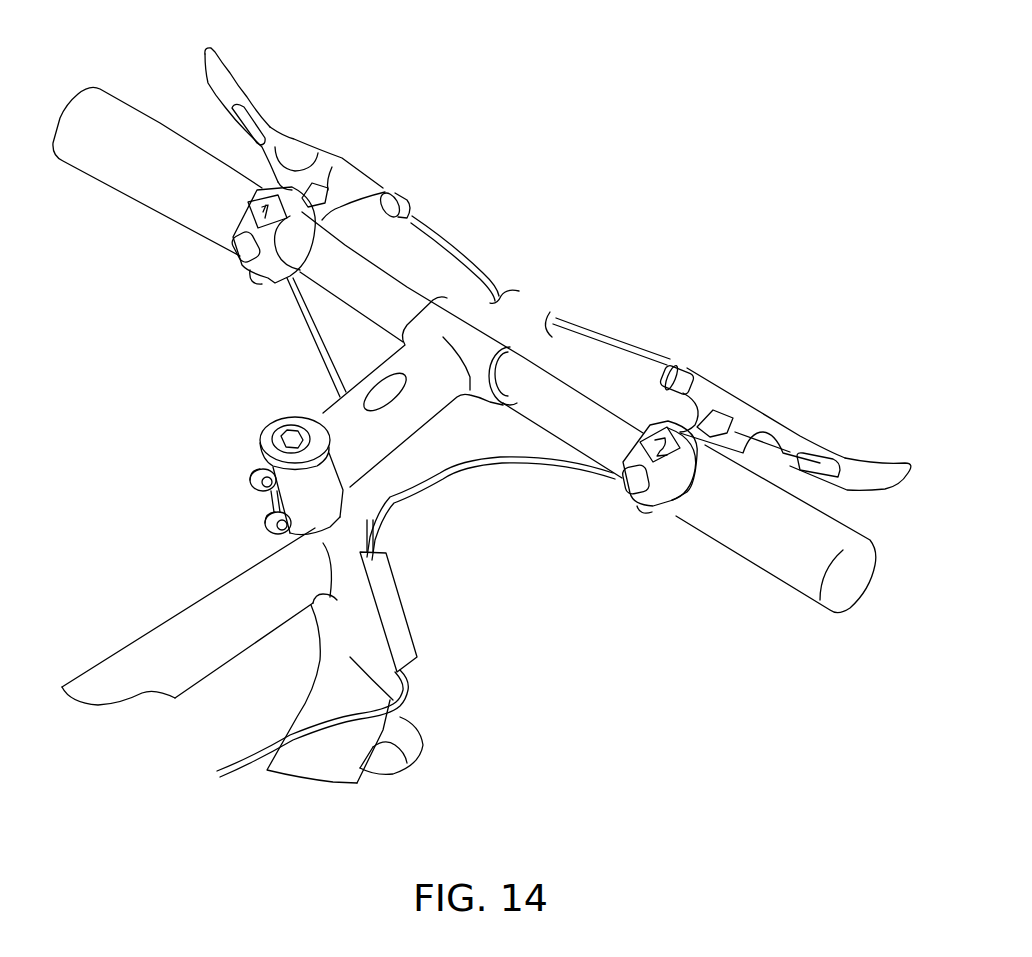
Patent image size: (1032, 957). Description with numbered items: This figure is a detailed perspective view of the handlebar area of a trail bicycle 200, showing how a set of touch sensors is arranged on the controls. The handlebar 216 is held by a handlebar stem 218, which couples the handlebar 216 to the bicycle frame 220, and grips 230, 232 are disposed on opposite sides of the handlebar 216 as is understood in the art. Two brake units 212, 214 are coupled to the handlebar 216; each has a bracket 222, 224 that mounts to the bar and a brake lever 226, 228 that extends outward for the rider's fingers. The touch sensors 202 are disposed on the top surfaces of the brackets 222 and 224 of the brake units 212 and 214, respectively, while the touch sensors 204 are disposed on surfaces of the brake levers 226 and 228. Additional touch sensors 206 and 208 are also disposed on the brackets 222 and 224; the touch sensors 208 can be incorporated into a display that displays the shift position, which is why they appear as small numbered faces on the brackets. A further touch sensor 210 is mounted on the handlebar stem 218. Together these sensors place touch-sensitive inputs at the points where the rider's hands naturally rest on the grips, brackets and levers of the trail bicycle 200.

The trail bicycle 200 is at (497, 92).
The touch sensor 202 is at (320, 187).
The touch sensor 204 is at (250, 130).
The touch sensor 206 is at (240, 250).
The touch sensor 208 is at (256, 199).
The touch sensor 210 is at (383, 390).
The brake unit 212 is at (784, 404).
The brake unit 214 is at (307, 118).
The handlebar 216 is at (398, 392).
The handlebar stem 218 is at (480, 340).
The bicycle frame 220 is at (157, 623).
The bracket 222 is at (750, 413).
The bracket 224 is at (376, 178).
The brake lever 226 is at (877, 460).
The brake lever 228 is at (230, 77).
The grip 230 is at (753, 537).
The grip 232 is at (123, 157).